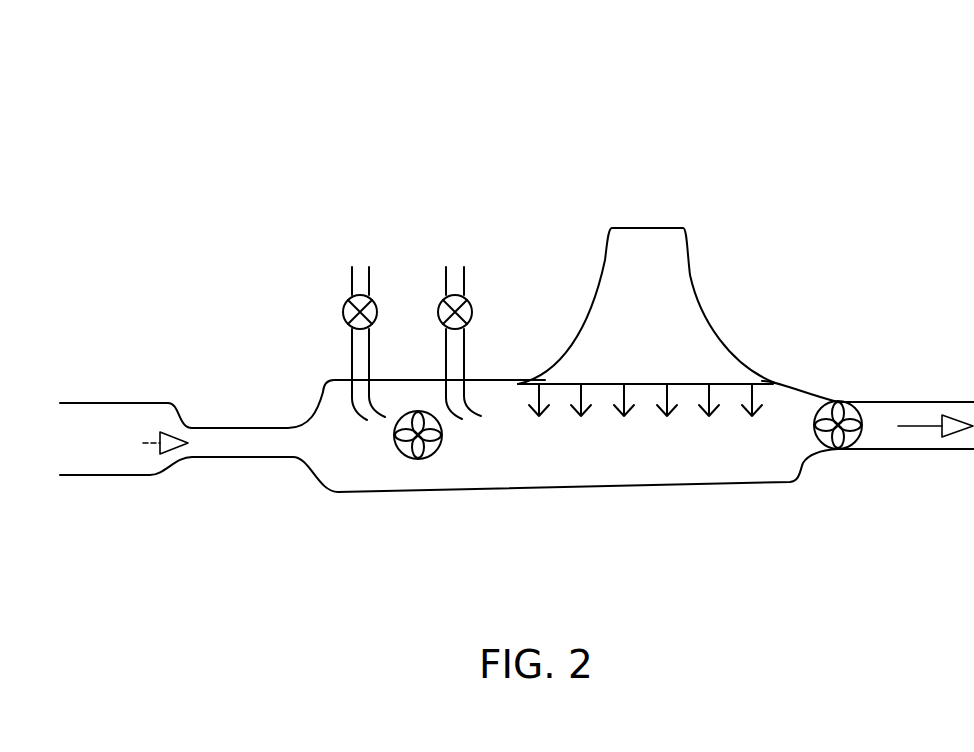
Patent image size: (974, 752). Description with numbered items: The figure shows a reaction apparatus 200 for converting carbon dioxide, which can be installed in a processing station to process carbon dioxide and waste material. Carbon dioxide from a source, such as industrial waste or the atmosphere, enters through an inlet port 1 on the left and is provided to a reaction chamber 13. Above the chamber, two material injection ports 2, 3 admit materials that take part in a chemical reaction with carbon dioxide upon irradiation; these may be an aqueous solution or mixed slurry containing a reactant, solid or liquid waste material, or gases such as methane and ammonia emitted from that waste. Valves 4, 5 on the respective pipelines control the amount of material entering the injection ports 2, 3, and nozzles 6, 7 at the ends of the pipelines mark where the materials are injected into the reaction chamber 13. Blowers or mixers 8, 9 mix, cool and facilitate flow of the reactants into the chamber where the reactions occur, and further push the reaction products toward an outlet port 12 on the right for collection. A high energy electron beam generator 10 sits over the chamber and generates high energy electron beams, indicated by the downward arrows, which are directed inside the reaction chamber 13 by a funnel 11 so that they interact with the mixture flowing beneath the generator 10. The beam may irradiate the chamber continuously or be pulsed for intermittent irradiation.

The reaction apparatus 200 is at (273, 52).
The inlet port 1 is at (176, 420).
The material injection port 2 is at (362, 305).
The material injection port 3 is at (457, 305).
The valve 4 is at (349, 313).
The valve 5 is at (468, 313).
The nozzle 6 is at (357, 404).
The nozzle 7 is at (473, 402).
The blower or mixer 8 is at (426, 445).
The blower or mixer 9 is at (829, 432).
The high energy electron beam generator 10 is at (688, 283).
The funnel 11 is at (645, 380).
The outlet port 12 is at (906, 405).
The reaction chamber 13 is at (563, 436).